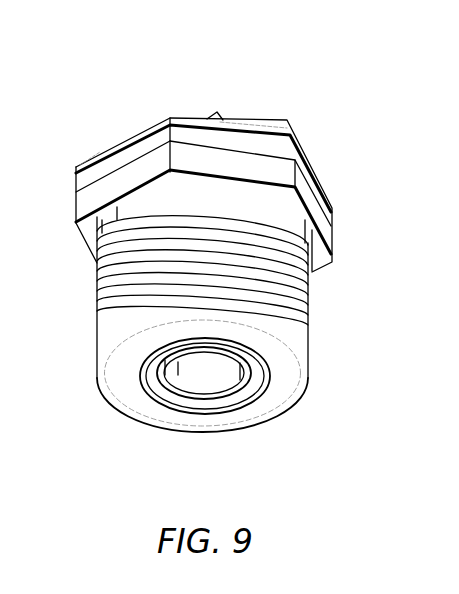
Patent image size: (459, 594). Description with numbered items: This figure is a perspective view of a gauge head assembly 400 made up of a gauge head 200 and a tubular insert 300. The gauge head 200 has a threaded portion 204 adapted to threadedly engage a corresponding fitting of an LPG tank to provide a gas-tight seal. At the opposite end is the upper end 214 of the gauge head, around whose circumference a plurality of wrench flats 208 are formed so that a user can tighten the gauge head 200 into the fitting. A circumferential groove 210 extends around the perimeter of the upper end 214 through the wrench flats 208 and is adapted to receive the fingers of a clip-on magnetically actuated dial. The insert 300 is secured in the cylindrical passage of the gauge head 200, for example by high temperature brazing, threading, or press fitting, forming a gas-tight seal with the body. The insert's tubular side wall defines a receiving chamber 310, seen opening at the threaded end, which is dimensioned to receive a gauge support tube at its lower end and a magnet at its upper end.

The gauge head assembly 400 is at (181, 53).
The gauge head 200 is at (159, 117).
The upper end 214 is at (254, 118).
The circumferential groove 210 is at (120, 165).
The wrench flats 208 is at (312, 207).
The threaded portion 204 is at (313, 331).
The tubular insert 300 is at (242, 405).
The receiving chamber 310 is at (192, 380).